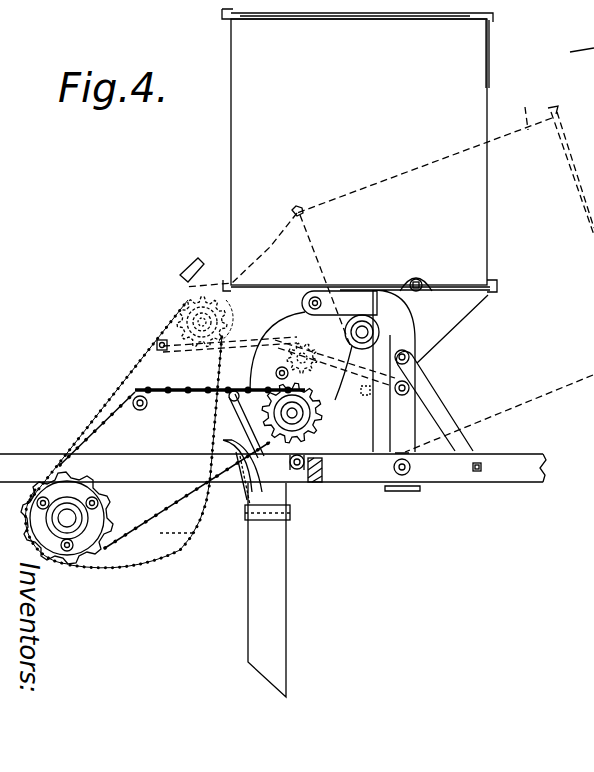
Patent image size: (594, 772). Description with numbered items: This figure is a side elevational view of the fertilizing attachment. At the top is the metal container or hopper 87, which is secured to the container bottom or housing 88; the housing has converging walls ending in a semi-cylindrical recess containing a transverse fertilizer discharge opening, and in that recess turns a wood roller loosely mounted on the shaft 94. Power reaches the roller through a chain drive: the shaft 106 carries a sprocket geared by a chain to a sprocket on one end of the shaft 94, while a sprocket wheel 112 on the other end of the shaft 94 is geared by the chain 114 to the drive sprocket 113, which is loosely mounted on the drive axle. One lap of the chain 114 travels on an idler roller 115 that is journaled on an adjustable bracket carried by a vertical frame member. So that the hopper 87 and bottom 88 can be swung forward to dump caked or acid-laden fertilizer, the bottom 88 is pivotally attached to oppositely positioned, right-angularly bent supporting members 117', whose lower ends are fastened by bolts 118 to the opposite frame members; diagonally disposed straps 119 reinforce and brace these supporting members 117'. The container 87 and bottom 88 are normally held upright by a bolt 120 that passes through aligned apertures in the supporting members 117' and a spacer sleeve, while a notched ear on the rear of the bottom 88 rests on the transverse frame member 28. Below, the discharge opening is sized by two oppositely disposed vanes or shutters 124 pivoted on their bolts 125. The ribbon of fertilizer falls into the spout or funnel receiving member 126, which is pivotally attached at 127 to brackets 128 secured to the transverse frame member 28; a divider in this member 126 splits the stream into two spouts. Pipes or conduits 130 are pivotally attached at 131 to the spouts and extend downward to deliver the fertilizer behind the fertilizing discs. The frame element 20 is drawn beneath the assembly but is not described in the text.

The frame rail 20 is at (452, 478).
The transverse frame member 28 is at (310, 480).
The hopper 87 is at (473, 109).
The container bottom or housing 88 is at (456, 336).
The shaft 94 is at (178, 300).
The shaft 106 is at (375, 298).
The sprocket wheel 112 is at (264, 383).
The drive sprocket 113 is at (110, 505).
The chain 114 is at (178, 532).
The idler roller 115 is at (148, 405).
The supporting members 117' is at (397, 348).
The bolts 118 is at (394, 484).
The diagonally disposed straps 119 is at (440, 400).
The bolt 120 is at (410, 380).
The vanes or shutters 124 is at (254, 446).
The pivots or bolts 125 is at (250, 395).
The spout or funnel receiving member 126 is at (242, 492).
The pivotal attachment 127 is at (258, 476).
The brackets 128 is at (300, 477).
The pipes or conduits 130 is at (273, 608).
The pivotal attachment 131 is at (243, 522).